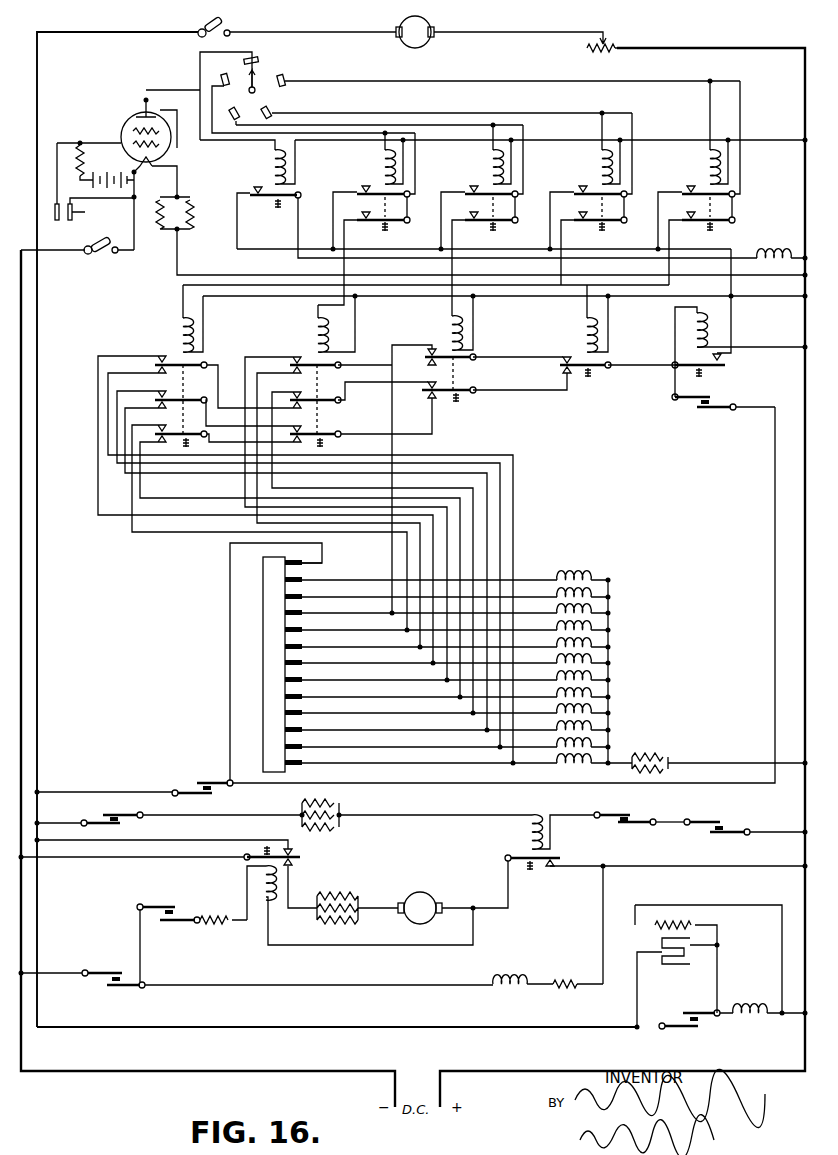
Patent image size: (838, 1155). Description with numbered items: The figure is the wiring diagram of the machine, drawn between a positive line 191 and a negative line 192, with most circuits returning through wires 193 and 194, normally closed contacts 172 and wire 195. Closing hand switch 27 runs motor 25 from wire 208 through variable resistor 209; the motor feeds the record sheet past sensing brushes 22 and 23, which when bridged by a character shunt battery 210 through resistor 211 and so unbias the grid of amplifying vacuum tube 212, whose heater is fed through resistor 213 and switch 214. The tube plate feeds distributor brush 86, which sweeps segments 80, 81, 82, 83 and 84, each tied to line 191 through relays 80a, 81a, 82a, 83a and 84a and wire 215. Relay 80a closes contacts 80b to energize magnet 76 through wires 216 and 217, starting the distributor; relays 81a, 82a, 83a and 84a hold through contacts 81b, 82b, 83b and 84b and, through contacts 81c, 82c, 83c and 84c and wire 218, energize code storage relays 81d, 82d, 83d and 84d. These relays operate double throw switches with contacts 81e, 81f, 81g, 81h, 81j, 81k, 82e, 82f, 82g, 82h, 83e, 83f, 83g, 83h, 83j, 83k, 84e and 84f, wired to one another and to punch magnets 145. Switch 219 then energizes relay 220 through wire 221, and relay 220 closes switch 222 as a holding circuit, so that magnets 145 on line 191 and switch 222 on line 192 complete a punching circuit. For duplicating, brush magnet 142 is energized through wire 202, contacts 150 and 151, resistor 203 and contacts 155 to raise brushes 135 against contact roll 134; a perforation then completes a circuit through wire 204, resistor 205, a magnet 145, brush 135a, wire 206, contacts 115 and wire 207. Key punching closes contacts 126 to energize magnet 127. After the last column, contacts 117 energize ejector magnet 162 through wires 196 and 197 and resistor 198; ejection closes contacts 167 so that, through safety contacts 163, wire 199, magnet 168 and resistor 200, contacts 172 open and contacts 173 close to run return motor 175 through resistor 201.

The hand switch 27 is at (199, 31).
The motor 25 is at (424, 45).
The variable resistor 209 is at (596, 54).
The wire 208 is at (723, 48).
The distributor segment 80 is at (258, 61).
The distributor brush 86 is at (258, 80).
The distributor segment 81 is at (310, 95).
The distributor segment 82 is at (232, 121).
The distributor segment 83 is at (276, 112).
The distributor segment 84 is at (288, 80).
The wire 193 is at (38, 117).
The negative line 192 is at (22, 703).
The positive line 191 is at (805, 661).
The amplifying vacuum tube 212 is at (133, 117).
The resistor 211 is at (88, 133).
The battery 210 is at (135, 181).
The resistor 213 is at (192, 203).
The sensing brush 23 is at (74, 212).
The sensing brush 22 is at (57, 221).
The switch 214 is at (105, 252).
The wire 215 is at (651, 140).
The relay 80a is at (268, 166).
The contacts 80b is at (250, 204).
The magnet 76 is at (774, 254).
The relay 81a is at (377, 162).
The contacts 81b is at (364, 188).
The contacts 81c is at (354, 215).
The relay 82a is at (485, 162).
The contacts 82b is at (472, 188).
The contacts 82c is at (462, 215).
The relay 83a is at (594, 162).
The contacts 83b is at (580, 188).
The contacts 83c is at (571, 215).
The relay 84a is at (702, 162).
The contacts 84b is at (688, 188).
The contacts 84c is at (680, 215).
The wire 218 is at (746, 299).
The wire 216 is at (736, 307).
The relay 220 is at (706, 328).
The wire 221 is at (779, 347).
The switch 222 is at (724, 361).
The switch 219 is at (700, 410).
The wire 217 is at (775, 609).
The code storage relay 83d is at (176, 324).
The code storage relay 81d is at (311, 322).
The code storage relay 82d is at (445, 324).
The code storage relay 84d is at (580, 326).
The contacts 83e is at (159, 356).
The contacts 83f is at (154, 366).
The contacts 83g is at (157, 392).
The contacts 83h is at (155, 405).
The contacts 83j is at (157, 426).
The contacts 83k is at (154, 442).
The contacts 81e is at (294, 357).
The contacts 81f is at (290, 368).
The contacts 81g is at (303, 393).
The contacts 81h is at (303, 407).
The contacts 81j is at (303, 426).
The contacts 81k is at (310, 437).
The contacts 82e is at (430, 350).
The contacts 82f is at (424, 357).
The contacts 82g is at (439, 385).
The contacts 82h is at (428, 402).
The contacts 84e is at (565, 357).
The contacts 84f is at (562, 373).
The wire 206 is at (230, 647).
The contact roll 134 is at (272, 740).
The brushes 135 is at (305, 747).
The brush 135a is at (305, 565).
The magnets 145 is at (568, 612).
The resistor 205 is at (649, 756).
The wire 204 is at (703, 763).
The wire 207 is at (97, 791).
The contacts 115 is at (196, 786).
The contacts 155 is at (103, 816).
The resistor 203 is at (340, 805).
The magnet 142 is at (523, 832).
The contacts 151 is at (631, 814).
The contacts 150 is at (727, 826).
The wire 202 is at (785, 832).
The wire 194 is at (170, 840).
The wire 195 is at (127, 859).
The contacts 172 is at (296, 852).
The contacts 173 is at (298, 864).
The magnet 168 is at (258, 882).
The contacts 167 is at (178, 911).
The resistor 200 is at (222, 926).
The contacts 117 is at (108, 988).
The wire 199 is at (320, 940).
The resistor 201 is at (350, 895).
The motor 175 is at (437, 901).
The safety contacts 163 is at (561, 862).
The wire 196 is at (676, 866).
The wire 197 is at (604, 893).
The resistor 198 is at (562, 978).
The magnet 162 is at (511, 977).
The contacts 126 is at (687, 1024).
The magnet 127 is at (753, 1019).